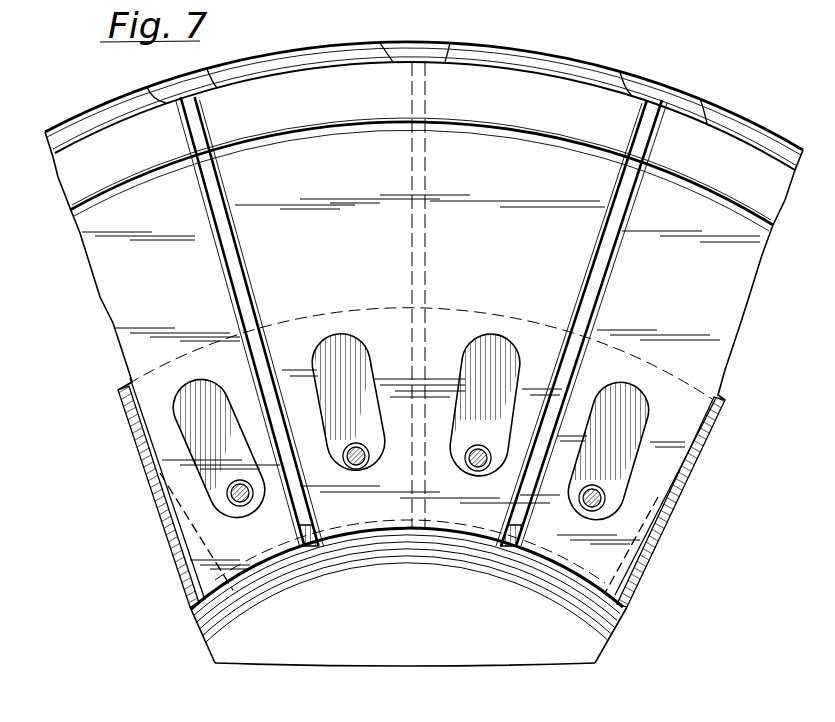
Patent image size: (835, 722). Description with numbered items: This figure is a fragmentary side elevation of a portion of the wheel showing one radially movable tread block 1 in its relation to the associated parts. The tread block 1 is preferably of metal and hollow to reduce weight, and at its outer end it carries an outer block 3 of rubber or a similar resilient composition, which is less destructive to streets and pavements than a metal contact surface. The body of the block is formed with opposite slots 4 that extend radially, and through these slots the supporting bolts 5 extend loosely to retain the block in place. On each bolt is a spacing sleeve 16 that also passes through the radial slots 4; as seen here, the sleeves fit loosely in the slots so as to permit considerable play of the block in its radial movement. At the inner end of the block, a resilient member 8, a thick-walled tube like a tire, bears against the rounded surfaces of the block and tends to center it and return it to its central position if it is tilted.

The tread block 1 is at (108, 210).
The outer block 3 is at (147, 88).
The slot 4 is at (365, 352).
The supporting bolt 5 is at (356, 443).
The resilient member 8 is at (503, 548).
The spacing sleeve 16 is at (466, 461).